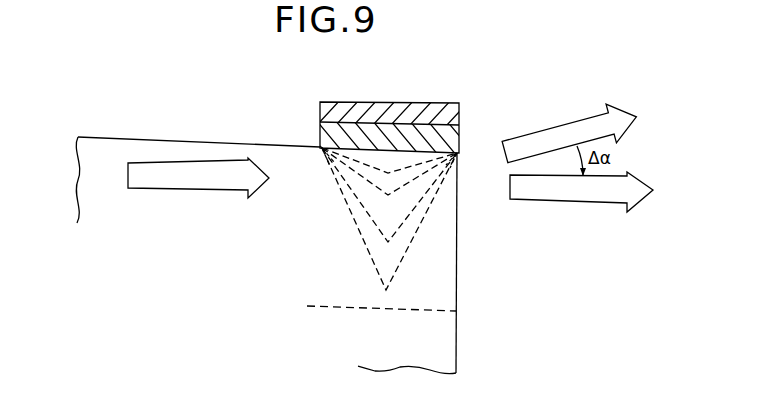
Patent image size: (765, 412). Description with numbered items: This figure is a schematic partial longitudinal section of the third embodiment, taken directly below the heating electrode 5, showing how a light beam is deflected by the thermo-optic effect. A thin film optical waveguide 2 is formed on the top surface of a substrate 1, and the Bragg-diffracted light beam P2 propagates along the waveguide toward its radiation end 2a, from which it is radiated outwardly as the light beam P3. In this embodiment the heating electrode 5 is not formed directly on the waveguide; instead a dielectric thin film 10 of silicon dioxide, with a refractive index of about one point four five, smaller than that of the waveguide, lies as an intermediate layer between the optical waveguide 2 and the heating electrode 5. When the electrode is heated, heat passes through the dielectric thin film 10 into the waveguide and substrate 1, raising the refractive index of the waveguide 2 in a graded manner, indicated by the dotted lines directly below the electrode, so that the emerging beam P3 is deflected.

The substrate 1 is at (456, 325).
The thin film optical waveguide 2 is at (132, 140).
The radiation end 2a is at (457, 231).
The heating electrode 5 is at (350, 101).
The dielectric thin film 10 is at (321, 139).
The light beam P2 is at (197, 190).
The light beam P3 is at (636, 119).